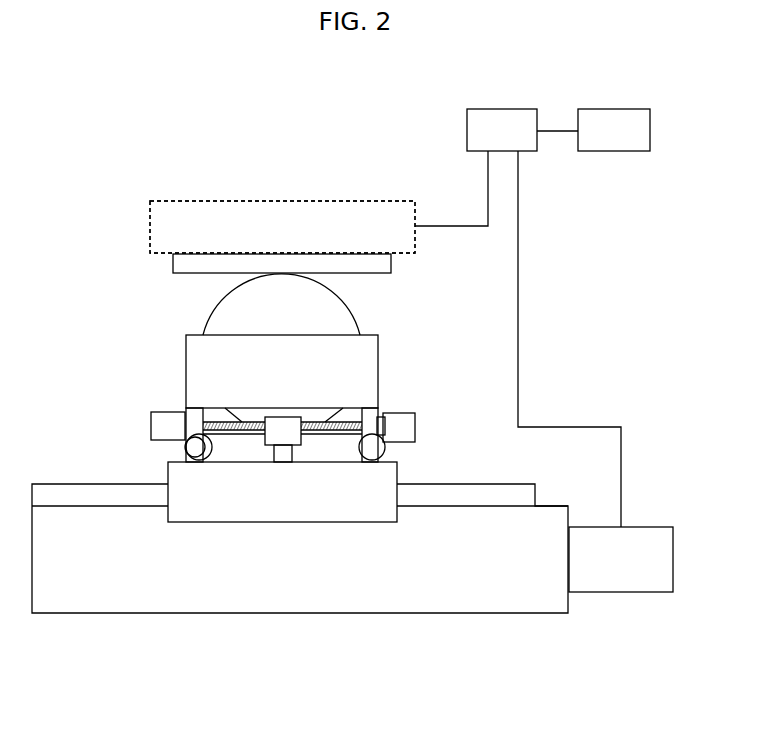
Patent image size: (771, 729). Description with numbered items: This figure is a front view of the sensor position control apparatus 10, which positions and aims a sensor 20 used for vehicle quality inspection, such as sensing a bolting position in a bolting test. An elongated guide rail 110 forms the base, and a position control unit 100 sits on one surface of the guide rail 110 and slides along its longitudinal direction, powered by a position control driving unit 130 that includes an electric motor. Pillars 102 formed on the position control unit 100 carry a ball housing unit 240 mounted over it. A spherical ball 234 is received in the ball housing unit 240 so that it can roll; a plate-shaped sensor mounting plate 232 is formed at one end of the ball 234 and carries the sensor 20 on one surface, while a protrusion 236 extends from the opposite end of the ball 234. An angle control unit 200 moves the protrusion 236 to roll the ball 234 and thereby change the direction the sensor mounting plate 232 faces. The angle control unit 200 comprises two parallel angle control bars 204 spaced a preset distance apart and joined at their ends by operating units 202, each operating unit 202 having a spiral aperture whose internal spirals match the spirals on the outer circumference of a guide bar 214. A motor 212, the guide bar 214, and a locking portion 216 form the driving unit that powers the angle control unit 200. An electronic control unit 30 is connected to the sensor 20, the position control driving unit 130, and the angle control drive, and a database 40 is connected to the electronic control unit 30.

The sensor position control apparatus 10 is at (567, 298).
The sensor 20 is at (281, 200).
The electronic control unit 30 is at (500, 108).
The database 40 is at (611, 108).
The position control unit 100 is at (223, 515).
The pillars 102 is at (195, 423).
The guide rail 110 is at (107, 603).
The position control driving unit 130 is at (648, 532).
The angle control unit 200 is at (322, 660).
The operating unit 202 is at (290, 433).
The angle control bar 204 is at (332, 434).
The motor 212 is at (182, 443).
The guide bar 214 is at (338, 420).
The locking portion 216 is at (193, 450).
The sensor mounting plate 232 is at (177, 263).
The ball 234 is at (346, 308).
The protrusion 236 is at (283, 458).
The ball housing unit 240 is at (195, 340).